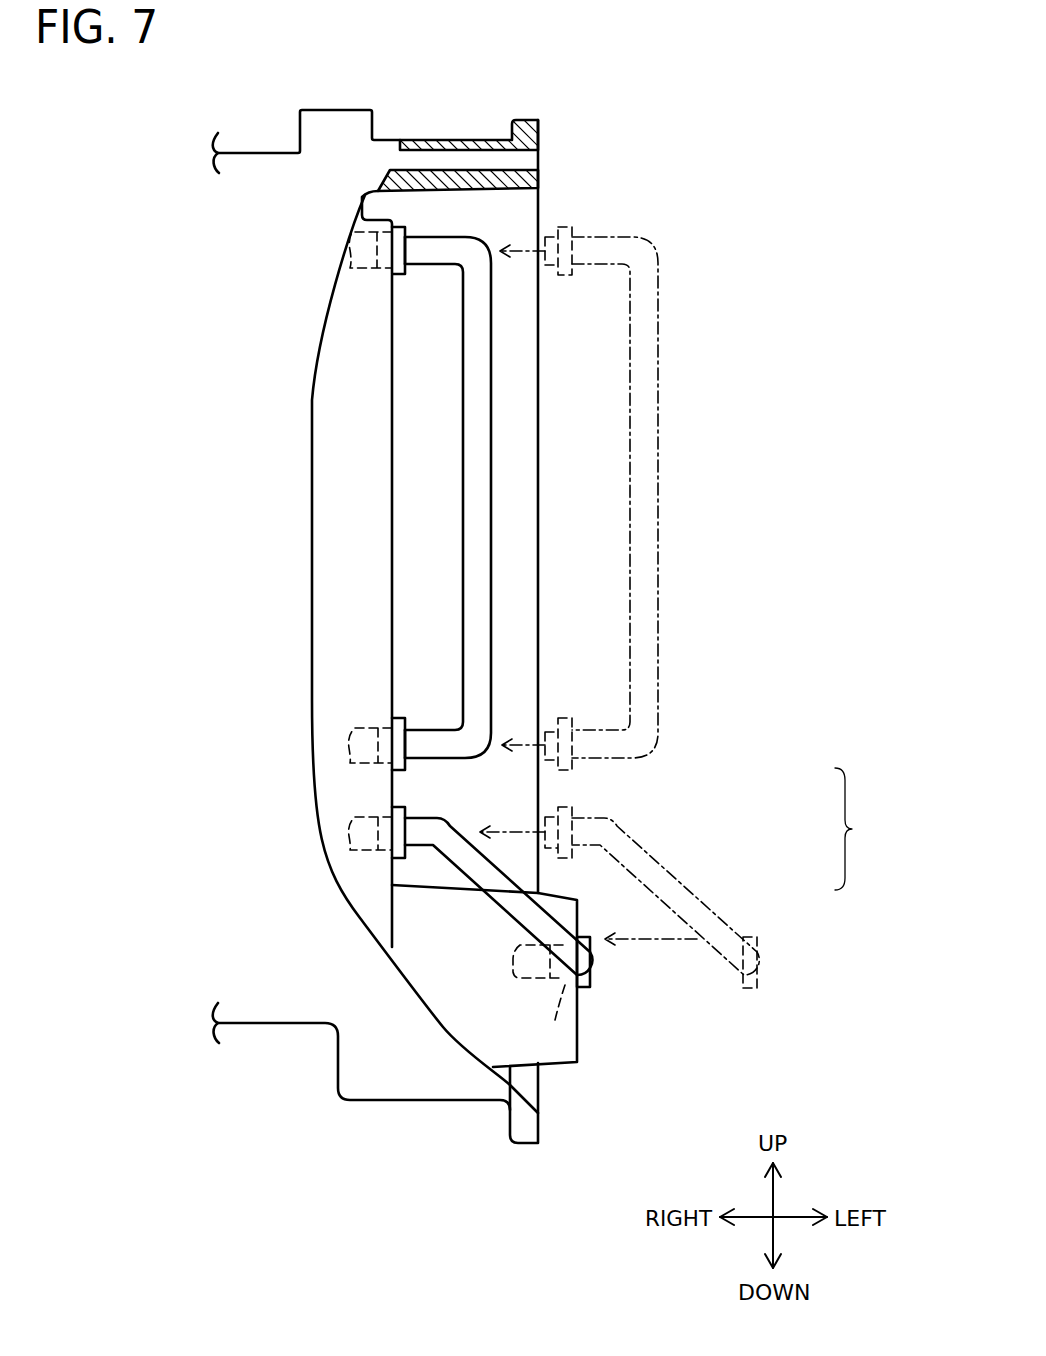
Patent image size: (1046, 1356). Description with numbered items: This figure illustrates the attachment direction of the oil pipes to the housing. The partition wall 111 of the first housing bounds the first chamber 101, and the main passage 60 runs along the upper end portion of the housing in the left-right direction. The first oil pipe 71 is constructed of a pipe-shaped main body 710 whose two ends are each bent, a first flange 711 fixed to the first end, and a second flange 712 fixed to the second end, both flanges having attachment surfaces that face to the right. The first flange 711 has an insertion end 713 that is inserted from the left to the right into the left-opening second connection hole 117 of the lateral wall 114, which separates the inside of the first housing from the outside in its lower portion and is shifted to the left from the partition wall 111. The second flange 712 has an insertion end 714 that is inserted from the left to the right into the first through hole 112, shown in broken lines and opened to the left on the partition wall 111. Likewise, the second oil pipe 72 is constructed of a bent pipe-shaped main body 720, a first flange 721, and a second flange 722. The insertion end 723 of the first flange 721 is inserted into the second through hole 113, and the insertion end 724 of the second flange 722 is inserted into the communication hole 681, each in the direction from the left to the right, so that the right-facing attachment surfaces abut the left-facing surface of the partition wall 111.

The main passage 60 is at (483, 155).
The first chamber 101 is at (257, 1025).
The partition wall 111 is at (392, 548).
The first through hole 112 is at (377, 818).
The second through hole 113 is at (377, 730).
The lateral wall 114 is at (577, 1040).
The second connection hole 117 is at (545, 968).
The communication hole 681 is at (360, 262).
The first oil pipe 71 is at (603, 890).
The main body 710 is at (490, 900).
The first flange 711 is at (582, 988).
The second flange 712 is at (400, 807).
The insertion end 713 is at (565, 985).
The insertion end 714 is at (383, 858).
The second oil pipe 72 is at (585, 497).
The main body 720 is at (491, 540).
The first flange 721 is at (400, 718).
The second flange 722 is at (400, 277).
The insertion end 723 is at (383, 728).
The insertion end 724 is at (377, 267).